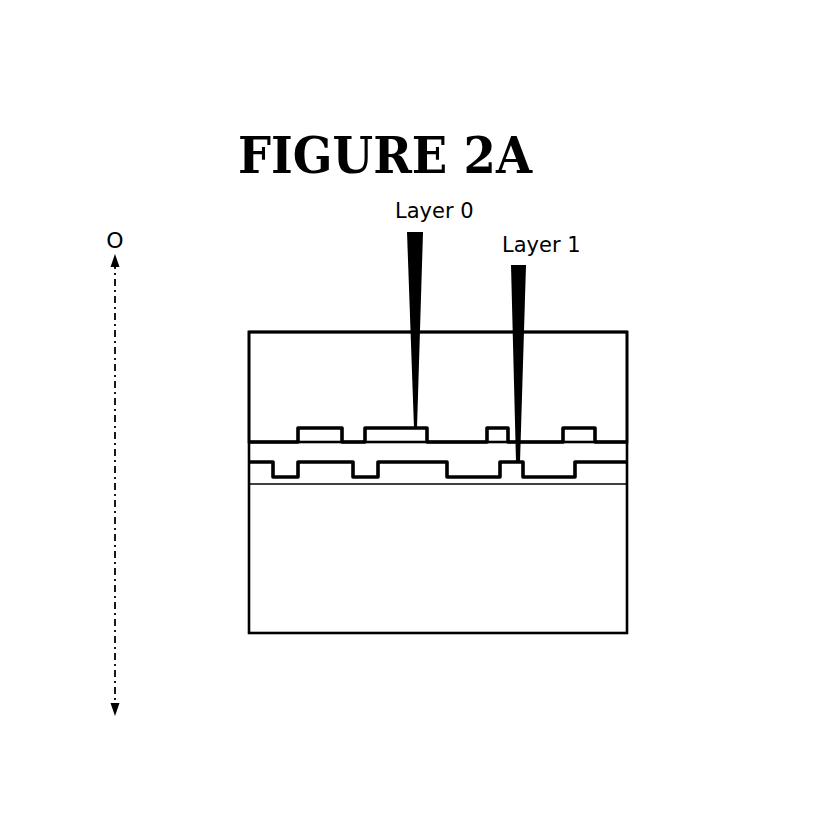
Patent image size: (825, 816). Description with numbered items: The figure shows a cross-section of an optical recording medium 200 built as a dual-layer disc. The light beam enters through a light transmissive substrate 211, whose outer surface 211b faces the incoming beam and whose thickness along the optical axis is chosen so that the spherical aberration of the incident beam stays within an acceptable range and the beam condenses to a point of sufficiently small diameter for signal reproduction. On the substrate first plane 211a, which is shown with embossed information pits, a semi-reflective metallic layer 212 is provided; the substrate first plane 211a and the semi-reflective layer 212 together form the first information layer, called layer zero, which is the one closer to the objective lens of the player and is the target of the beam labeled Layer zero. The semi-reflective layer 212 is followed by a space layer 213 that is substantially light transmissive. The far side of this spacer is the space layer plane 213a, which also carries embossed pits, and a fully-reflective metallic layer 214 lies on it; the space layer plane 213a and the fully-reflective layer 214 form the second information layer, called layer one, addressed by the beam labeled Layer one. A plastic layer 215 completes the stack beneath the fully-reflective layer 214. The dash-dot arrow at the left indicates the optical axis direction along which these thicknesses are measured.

The optical recording medium 200 is at (822, 255).
The substrate 211 is at (617, 400).
The substrate first plane 211a is at (615, 438).
The substrate surface 211b is at (615, 338).
The semi-reflective layer 212 is at (265, 438).
The space layer 213 is at (267, 452).
The space layer plane 213a is at (560, 472).
The fully-reflective layer 214 is at (265, 465).
The plastic layer 215 is at (597, 475).